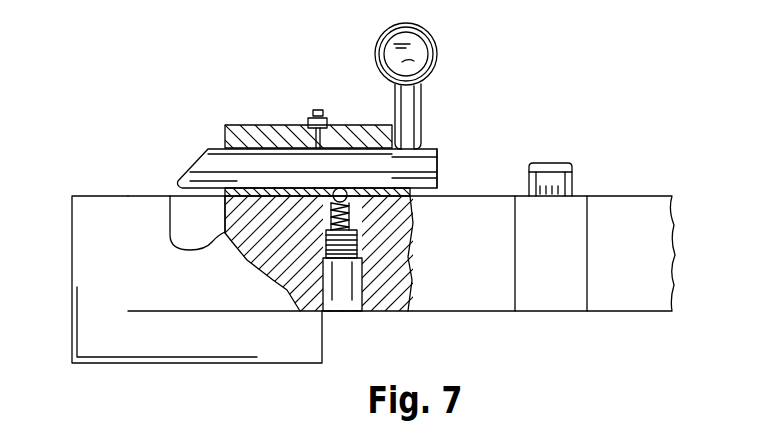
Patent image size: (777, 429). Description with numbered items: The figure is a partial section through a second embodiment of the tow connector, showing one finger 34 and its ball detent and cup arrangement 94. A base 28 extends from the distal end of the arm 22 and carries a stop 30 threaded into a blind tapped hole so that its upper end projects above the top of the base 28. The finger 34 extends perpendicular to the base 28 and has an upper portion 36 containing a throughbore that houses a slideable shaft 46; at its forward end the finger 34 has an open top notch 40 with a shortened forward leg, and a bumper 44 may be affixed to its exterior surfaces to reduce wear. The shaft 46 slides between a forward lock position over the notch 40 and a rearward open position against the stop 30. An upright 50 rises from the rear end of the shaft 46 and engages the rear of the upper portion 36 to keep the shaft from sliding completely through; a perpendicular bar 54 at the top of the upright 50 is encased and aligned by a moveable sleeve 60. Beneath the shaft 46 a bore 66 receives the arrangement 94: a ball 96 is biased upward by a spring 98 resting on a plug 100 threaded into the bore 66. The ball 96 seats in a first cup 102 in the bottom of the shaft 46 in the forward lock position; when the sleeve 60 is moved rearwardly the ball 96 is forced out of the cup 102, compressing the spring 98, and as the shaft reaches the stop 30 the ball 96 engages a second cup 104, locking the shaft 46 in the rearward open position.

The arm 22 is at (666, 250).
The base 28 is at (583, 286).
The stop 30 is at (572, 168).
The finger 34 is at (477, 293).
The upper portion 36 is at (290, 126).
The open top notch 40 is at (178, 243).
The bumper 44 is at (322, 340).
The slideable shaft 46 is at (355, 167).
The upright 50 is at (414, 113).
The bar 54 is at (428, 66).
The moveable sleeve 60 is at (437, 48).
The bore 66 is at (225, 206).
The ball detent and cup arrangement 94 is at (320, 221).
The ball 96 is at (347, 197).
The spring 98 is at (357, 232).
The plug 100 is at (357, 250).
The first cup 102 is at (437, 168).
The second cup 104 is at (250, 188).